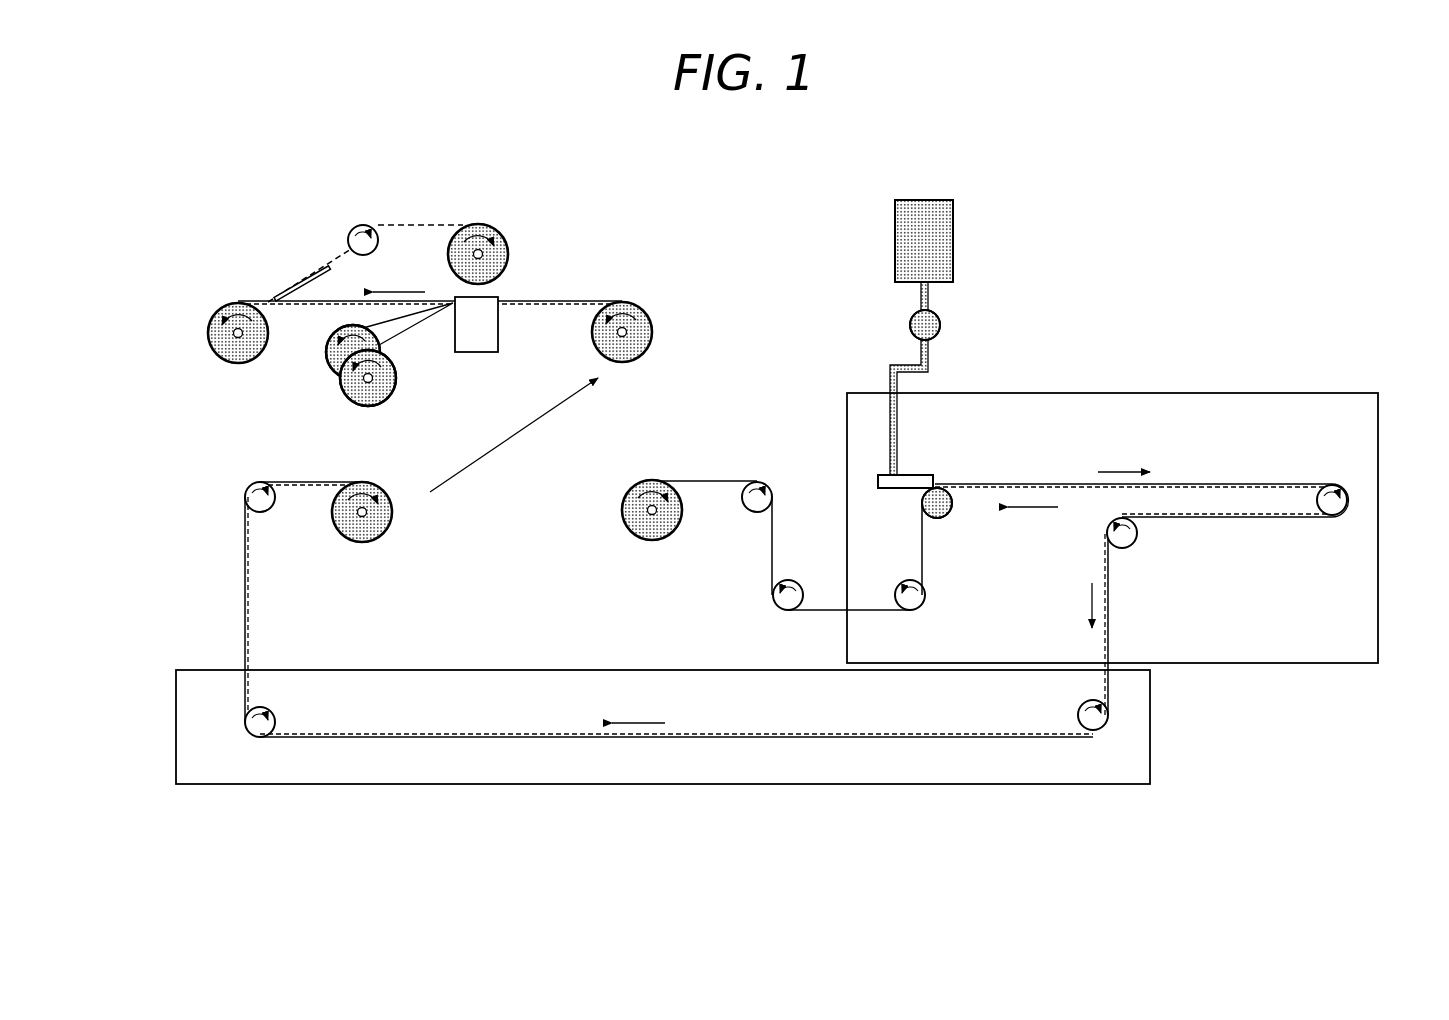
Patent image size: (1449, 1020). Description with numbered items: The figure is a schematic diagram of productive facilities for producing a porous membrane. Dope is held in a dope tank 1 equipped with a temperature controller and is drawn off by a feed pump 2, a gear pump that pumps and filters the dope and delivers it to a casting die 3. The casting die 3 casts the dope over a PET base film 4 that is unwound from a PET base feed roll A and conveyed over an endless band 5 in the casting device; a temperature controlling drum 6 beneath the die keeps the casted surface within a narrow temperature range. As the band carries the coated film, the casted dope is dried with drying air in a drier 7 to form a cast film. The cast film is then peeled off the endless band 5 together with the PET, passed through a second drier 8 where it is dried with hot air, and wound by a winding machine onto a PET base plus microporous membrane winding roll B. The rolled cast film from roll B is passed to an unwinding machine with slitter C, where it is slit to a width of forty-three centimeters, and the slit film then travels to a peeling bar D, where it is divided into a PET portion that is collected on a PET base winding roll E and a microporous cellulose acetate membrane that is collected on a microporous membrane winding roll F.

The dope tank 1 is at (953, 220).
The feed pump 2 is at (940, 323).
The casting die 3 is at (913, 475).
The PET base film 4 is at (691, 617).
The endless band 5 is at (1050, 483).
The temperature controlling drum 6 is at (950, 515).
The drier 7 is at (1378, 520).
The drier 8 is at (1150, 747).
The PET base feed roll A is at (658, 478).
The PET base+microporous membrane winding roll B is at (353, 545).
The unwinding machine with slitter C is at (430, 392).
The peeling bar D is at (313, 271).
The PET base winding roll E is at (222, 366).
The microporous membrane winding roll F is at (490, 227).